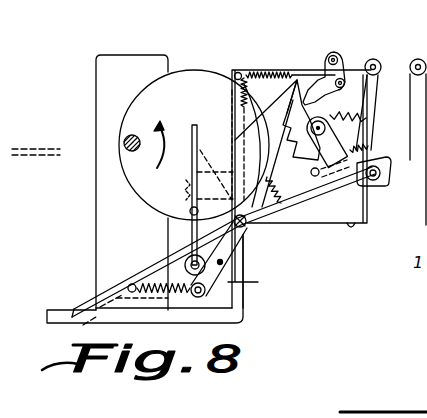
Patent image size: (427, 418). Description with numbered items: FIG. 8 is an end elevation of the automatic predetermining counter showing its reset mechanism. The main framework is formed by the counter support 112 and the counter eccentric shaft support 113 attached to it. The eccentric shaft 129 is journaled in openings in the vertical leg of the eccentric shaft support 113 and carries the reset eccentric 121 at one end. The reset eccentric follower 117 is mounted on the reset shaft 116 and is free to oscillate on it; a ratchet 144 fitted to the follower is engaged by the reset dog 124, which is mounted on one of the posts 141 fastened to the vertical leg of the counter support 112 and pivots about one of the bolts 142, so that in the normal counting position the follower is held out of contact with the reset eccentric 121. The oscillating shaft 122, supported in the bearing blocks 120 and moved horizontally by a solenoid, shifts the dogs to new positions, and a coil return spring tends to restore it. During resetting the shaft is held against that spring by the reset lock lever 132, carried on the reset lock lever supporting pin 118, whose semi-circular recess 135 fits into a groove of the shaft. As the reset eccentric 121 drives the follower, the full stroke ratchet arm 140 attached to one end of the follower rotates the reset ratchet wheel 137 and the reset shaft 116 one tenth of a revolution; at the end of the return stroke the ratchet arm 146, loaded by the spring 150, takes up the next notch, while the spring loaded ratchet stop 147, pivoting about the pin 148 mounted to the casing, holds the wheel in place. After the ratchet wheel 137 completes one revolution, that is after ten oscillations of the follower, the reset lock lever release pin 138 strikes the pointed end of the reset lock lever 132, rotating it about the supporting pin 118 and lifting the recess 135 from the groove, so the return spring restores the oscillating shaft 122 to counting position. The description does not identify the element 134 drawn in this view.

The counter support 112 is at (50, 310).
The counter eccentric shaft support 113 is at (98, 187).
The reset shaft 116 is at (326, 125).
The reset eccentric follower 117 is at (306, 224).
The reset lock lever supporting pin 118 is at (246, 225).
The bearing blocks 120 is at (221, 262).
The reset eccentric 121 is at (180, 78).
The oscillating shaft 122 is at (175, 262).
The reset dog 124 is at (187, 133).
The eccentric shaft 129 is at (125, 139).
The reset lock lever 132 is at (220, 265).
The spring 134 is at (290, 128).
The semi-circular recess 135 is at (215, 286).
The reset ratchet wheel 137 is at (348, 60).
The reset lock lever release pin 138 is at (302, 120).
The full stroke ratchet arm 140 is at (345, 180).
The posts 141 is at (213, 160).
The bolts 142 is at (186, 196).
The ratchet 144 is at (245, 228).
The ratchet arm 146 is at (367, 140).
The spring loaded ratchet stop 147 is at (347, 50).
The pin 148 is at (345, 77).
The spring 150 is at (367, 149).